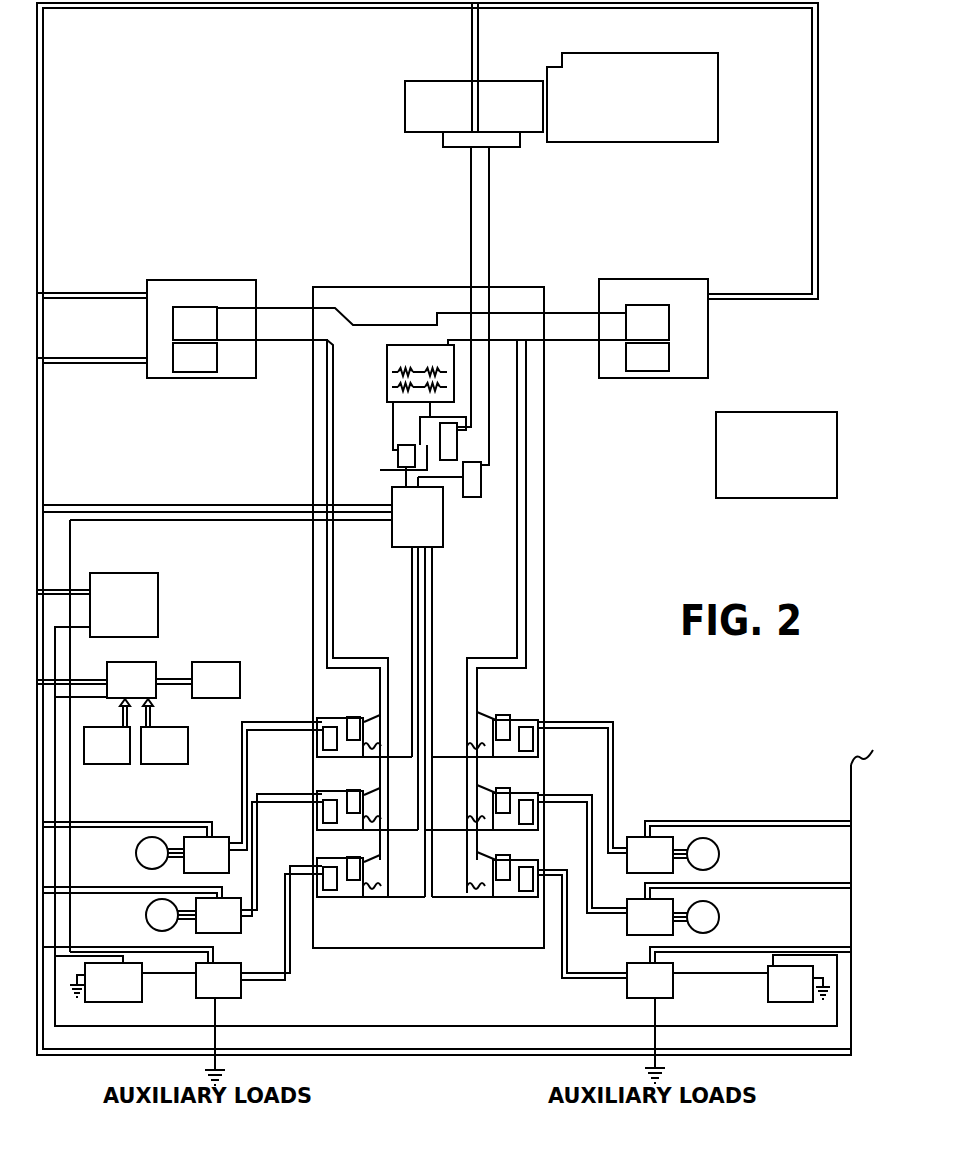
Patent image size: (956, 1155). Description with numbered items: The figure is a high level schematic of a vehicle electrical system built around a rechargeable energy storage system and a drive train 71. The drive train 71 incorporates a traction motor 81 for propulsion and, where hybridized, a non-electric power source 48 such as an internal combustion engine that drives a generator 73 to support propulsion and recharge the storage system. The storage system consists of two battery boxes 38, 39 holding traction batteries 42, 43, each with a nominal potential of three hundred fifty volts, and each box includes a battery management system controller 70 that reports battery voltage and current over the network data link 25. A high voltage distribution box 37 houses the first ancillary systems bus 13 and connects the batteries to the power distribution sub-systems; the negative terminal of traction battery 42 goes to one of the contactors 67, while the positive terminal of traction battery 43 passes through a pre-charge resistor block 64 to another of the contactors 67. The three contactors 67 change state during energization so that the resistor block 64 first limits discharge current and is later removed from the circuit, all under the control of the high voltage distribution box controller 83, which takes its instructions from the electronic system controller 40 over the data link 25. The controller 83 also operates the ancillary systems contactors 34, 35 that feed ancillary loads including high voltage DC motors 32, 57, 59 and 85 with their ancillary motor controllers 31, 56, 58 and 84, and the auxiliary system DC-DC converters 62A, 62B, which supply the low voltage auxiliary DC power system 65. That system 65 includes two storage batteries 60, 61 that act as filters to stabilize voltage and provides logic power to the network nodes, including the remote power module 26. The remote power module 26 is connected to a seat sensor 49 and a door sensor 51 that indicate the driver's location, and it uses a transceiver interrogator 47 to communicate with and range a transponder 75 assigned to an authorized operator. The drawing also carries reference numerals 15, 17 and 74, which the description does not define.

The first ancillary systems bus 13 is at (332, 575).
The high voltage wiring 15 is at (540, 592).
The high voltage cable 17 is at (490, 218).
The network data link 25 is at (62, 295).
The remote power module 26 is at (119, 673).
The ancillary motor controller 31 is at (658, 845).
The high voltage DC motor 32 is at (715, 852).
The ancillary systems contactor 34 is at (372, 908).
The ancillary systems contactor 35 is at (483, 645).
The high voltage distribution box 37 is at (545, 527).
The battery box 38 is at (183, 328).
The battery box 39 is at (690, 304).
The electronic system controller 40 is at (148, 592).
The traction battery 42 is at (215, 342).
The traction battery 43 is at (668, 323).
The transceiver interrogator 47 is at (217, 668).
The non-electric power source 48 is at (642, 120).
The seat sensor 49 is at (178, 750).
The door sensor 51 is at (123, 758).
The ancillary motor controller 56 is at (633, 929).
The high voltage DC motor 57 is at (715, 920).
The ancillary motor controller 58 is at (233, 925).
The high voltage DC motor 59 is at (155, 922).
The storage battery 60 is at (135, 988).
The storage battery 61 is at (775, 993).
The auxiliary system DC-DC converter 62A is at (228, 983).
The auxiliary system DC-DC converter 62B is at (627, 993).
The pre-charge resistor block 64 is at (389, 378).
The auxiliary DC power system 65 is at (392, 1020).
The contactors 67 is at (460, 515).
The battery management system controller 70 is at (185, 367).
The drive train 71 is at (531, 143).
The generator 73 is at (538, 127).
The engine compartment 74 is at (357, 160).
The transponder 75 is at (758, 425).
The motor 81 is at (438, 81).
The high voltage distribution box controller 83 is at (402, 548).
The ancillary motor controller 84 is at (215, 836).
The high voltage DC motor 85 is at (145, 860).